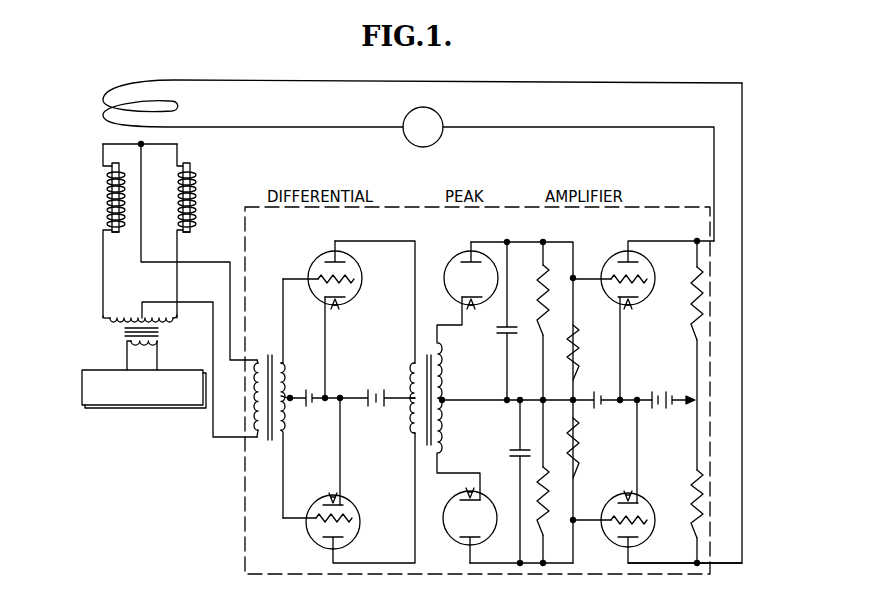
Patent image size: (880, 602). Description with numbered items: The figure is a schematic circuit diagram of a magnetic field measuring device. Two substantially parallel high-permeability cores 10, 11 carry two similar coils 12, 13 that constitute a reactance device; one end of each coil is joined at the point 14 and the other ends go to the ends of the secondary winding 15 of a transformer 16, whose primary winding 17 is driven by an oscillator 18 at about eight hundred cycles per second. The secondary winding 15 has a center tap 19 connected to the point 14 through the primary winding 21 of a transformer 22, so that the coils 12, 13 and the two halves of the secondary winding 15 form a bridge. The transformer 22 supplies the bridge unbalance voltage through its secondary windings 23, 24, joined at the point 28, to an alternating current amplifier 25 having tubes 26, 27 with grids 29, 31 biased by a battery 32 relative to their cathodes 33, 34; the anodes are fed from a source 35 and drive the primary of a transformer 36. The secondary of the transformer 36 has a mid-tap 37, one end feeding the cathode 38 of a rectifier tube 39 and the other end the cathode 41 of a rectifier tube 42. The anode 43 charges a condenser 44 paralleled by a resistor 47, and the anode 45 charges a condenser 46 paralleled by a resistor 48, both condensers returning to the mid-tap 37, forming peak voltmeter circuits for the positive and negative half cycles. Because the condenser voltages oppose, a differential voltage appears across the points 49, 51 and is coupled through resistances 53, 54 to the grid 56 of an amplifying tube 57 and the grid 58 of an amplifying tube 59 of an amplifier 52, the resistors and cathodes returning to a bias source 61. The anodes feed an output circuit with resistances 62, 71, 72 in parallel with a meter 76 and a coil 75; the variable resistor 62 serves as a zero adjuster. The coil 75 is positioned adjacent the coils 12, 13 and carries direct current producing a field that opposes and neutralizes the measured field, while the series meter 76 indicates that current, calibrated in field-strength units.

The core 10 is at (182, 178).
The core 11 is at (106, 178).
The coil 12 is at (193, 222).
The coil 13 is at (122, 233).
The point 14 is at (142, 144).
The secondary winding 15 is at (109, 317).
The transformer 16 is at (122, 331).
The primary winding 17 is at (150, 343).
The oscillator 18 is at (168, 407).
The center tap 19 is at (141, 316).
The primary winding 21 is at (254, 412).
The transformer 22 is at (262, 437).
The secondary winding 23 is at (284, 367).
The secondary winding 24 is at (284, 434).
The alternating current amplifier 25 is at (383, 241).
The electronic tube 26 is at (328, 316).
The electronic tube 27 is at (334, 474).
The junction 28 is at (291, 401).
The grid 29 is at (318, 291).
The grid 31 is at (318, 522).
The battery 32 is at (315, 395).
The cathode 33 is at (349, 290).
The cathode 34 is at (318, 503).
The source 35 is at (390, 396).
The transformer 36 is at (444, 420).
The mid-tap 37 is at (433, 455).
The cathode 38 is at (460, 297).
The rectifier tube 39 is at (460, 288).
The cathode 41 is at (468, 511).
The rectifier tube 42 is at (460, 543).
The anode 43 is at (464, 257).
The condenser 44 is at (500, 334).
The anode 45 is at (475, 541).
The condenser 46 is at (517, 450).
The resistor 47 is at (543, 281).
The resistor 48 is at (546, 521).
The point 49 is at (508, 241).
The point 51 is at (520, 563).
The amplifier 52 is at (643, 305).
The resistance 53 is at (575, 327).
The resistance 54 is at (575, 450).
The grid 56 is at (614, 288).
The amplifying tube 57 is at (655, 281).
The grid 58 is at (657, 481).
The amplifying tube 59 is at (642, 545).
The bias source 61 is at (608, 376).
The variable resistor 62 is at (692, 409).
The resistance 71 is at (695, 316).
The resistance 72 is at (694, 499).
The coil 75 is at (152, 100).
The meter 76 is at (437, 141).